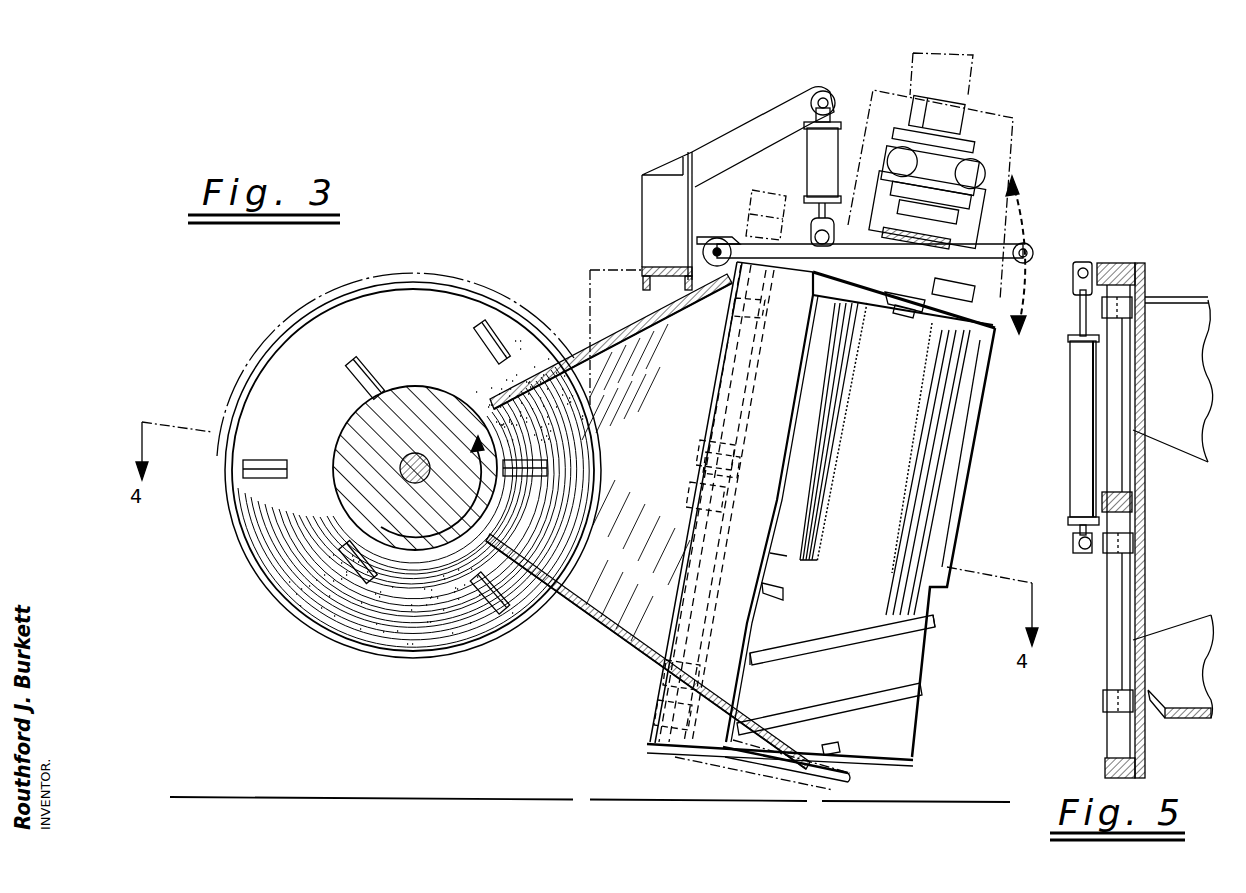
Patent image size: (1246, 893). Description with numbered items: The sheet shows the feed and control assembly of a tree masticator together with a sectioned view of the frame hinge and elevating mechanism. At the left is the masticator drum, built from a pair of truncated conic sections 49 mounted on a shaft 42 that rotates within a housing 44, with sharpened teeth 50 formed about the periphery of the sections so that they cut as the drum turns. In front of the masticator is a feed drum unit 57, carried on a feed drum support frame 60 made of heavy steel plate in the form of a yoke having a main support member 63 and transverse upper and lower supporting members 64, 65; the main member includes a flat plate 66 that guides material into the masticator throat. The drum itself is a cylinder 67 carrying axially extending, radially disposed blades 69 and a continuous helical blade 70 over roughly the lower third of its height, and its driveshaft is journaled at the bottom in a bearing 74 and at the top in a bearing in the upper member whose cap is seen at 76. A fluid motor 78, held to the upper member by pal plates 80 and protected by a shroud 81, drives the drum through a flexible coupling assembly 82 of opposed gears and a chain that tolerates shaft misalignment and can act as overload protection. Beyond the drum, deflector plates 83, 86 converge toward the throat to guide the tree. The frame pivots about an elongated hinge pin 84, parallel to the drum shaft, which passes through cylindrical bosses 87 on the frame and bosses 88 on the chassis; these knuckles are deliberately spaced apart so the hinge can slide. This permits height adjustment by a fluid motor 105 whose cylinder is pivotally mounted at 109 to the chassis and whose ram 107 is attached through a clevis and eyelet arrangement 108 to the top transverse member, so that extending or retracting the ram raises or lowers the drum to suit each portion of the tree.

In FIG. 3, the shaft 42 is at (410, 455).
In FIG. 3, the housing 44 is at (481, 272).
In FIG. 3, the truncated conic sections 49 is at (283, 570).
In FIG. 3, the teeth 50 is at (478, 343).
In FIG. 3, the feed drum unit 57 is at (1010, 428).
In FIG. 3, the feed drum support frame 60 is at (672, 758).
In FIG. 3, the main support member 63 is at (745, 622).
In FIG. 3, the upper transverse supporting member 64 is at (953, 290).
In FIG. 5, the upper transverse supporting member 64 is at (1138, 262).
In FIG. 3, the lower transverse supporting member 65 is at (843, 772).
In FIG. 5, the flat plate 66 is at (1140, 542).
In FIG. 3, the cylinder 67 is at (821, 519).
In FIG. 3, the blades 69 is at (905, 512).
In FIG. 3, the helical blade 70 is at (850, 708).
In FIG. 3, the bearing 74 is at (826, 745).
In FIG. 3, the bearing cap 76 is at (905, 305).
In FIG. 3, the fluid motor 78 is at (962, 130).
In FIG. 3, the pal plates 80 is at (870, 198).
In FIG. 3, the shroud 81 is at (1030, 140).
In FIG. 3, the flexible coupling assembly 82 is at (915, 246).
In FIG. 3, the deflector plate 83 is at (697, 502).
In FIG. 3, the hinge pin 84 is at (660, 697).
In FIG. 5, the hinge pin 84 is at (1116, 637).
In FIG. 3, the deflector plate 86 is at (650, 320).
In FIG. 5, the deflector plate 86 is at (1173, 507).
In FIG. 3, the cylindrical bosses 87 is at (742, 236).
In FIG. 5, the cylindrical bosses 87 is at (1106, 262).
In FIG. 3, the cylindrical bosses 88 is at (740, 302).
In FIG. 5, the cylindrical bosses 88 is at (1120, 305).
In FIG. 5, the fluid motor 105 is at (1080, 445).
In FIG. 5, the ram 107 is at (1082, 325).
In FIG. 5, the clevis and eyelet arrangement 108 is at (1075, 272).
In FIG. 5, the pivotal mounting 109 is at (1080, 546).